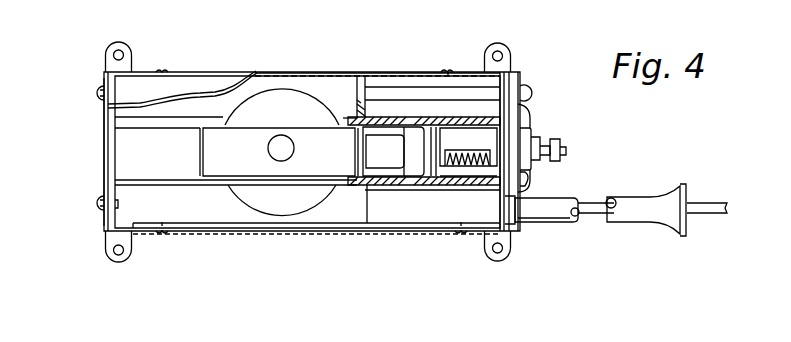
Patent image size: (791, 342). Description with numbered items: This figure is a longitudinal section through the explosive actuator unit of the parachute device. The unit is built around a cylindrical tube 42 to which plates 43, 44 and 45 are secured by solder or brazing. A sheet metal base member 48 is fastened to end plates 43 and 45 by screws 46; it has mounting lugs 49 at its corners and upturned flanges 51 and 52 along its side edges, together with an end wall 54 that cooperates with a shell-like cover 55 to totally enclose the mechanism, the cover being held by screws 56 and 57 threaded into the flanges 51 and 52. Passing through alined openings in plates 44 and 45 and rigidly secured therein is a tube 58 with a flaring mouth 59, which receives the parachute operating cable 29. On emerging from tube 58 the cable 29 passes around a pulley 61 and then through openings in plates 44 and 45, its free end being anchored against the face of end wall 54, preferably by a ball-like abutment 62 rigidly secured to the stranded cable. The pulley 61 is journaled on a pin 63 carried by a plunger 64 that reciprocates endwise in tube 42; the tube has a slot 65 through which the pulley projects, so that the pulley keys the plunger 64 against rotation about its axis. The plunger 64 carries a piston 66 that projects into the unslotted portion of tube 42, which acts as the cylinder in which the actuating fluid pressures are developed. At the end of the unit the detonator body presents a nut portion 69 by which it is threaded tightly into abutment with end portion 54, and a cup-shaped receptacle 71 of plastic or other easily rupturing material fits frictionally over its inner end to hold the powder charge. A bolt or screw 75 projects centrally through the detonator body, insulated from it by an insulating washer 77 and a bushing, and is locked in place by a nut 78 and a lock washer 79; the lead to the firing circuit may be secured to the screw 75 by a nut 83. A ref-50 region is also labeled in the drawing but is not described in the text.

The parachute operating cable 29 is at (401, 92).
The cylindrical tube 42 is at (385, 190).
The end plate 43 is at (108, 166).
The plate 44 is at (361, 74).
The end plate 45 is at (512, 74).
The screws 46 is at (98, 92).
The sheet metal base member 48 is at (236, 197).
The mounting lugs 49 is at (108, 252).
The side plate 50 is at (108, 128).
The upturned flange 51 is at (213, 224).
The upturned flange 52 is at (290, 73).
The end wall 54 is at (520, 82).
The shell like cover 55 is at (211, 82).
The screws 56 is at (164, 236).
The screws 57 is at (162, 70).
The tube 58 is at (560, 216).
The flaring mouth 59 is at (684, 184).
The pulley 61 is at (282, 152).
The ball-like abutment 62 is at (532, 96).
The pin 63 is at (294, 149).
The plunger 64 is at (279, 152).
The slot 65 is at (163, 124).
The piston 66 is at (430, 186).
The nut portion 69 is at (533, 190).
The cup shaped receptacle 71 is at (470, 136).
The bolt or screw 75 is at (568, 151).
The insulating washer 77 is at (533, 134).
The nut 78 is at (542, 140).
The lock washer 79 is at (527, 174).
The nut 83 is at (558, 140).